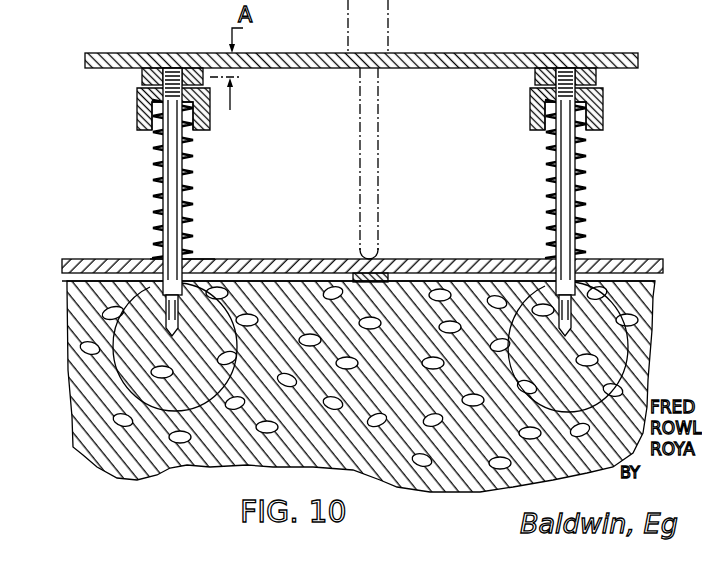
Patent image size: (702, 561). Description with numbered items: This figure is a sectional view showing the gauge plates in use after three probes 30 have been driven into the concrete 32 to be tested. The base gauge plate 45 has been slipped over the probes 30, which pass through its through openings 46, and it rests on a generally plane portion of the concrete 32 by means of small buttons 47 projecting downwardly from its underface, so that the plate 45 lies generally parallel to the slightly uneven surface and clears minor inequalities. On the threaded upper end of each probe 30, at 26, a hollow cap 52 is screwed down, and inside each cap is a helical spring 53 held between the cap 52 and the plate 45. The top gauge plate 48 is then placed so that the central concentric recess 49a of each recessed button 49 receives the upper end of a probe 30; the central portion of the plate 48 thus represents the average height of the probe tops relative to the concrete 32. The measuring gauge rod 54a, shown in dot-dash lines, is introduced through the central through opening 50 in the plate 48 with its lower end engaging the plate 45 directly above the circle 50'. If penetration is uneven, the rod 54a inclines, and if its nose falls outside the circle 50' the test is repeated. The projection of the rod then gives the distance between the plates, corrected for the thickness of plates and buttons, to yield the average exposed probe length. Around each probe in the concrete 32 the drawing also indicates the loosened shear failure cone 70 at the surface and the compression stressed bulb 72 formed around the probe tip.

The threaded upper end of probe 26 is at (172, 130).
The probe 30 is at (192, 233).
The concrete 32 is at (220, 456).
The base gauge plate 45 is at (478, 266).
The through opening 46 is at (200, 262).
The button 47 is at (352, 275).
The top gauge plate 48 is at (425, 62).
The recessed button 49 is at (150, 72).
The central concentric recess 49a is at (180, 69).
The central through opening 50 is at (350, 26).
The circle 50' is at (393, 248).
The hollow cap 52 is at (528, 112).
The helical spring 53 is at (153, 187).
The measuring gauge rod 54a is at (380, 157).
The shear failure cone 70 is at (200, 279).
The compression stressed bulb 72 is at (142, 288).